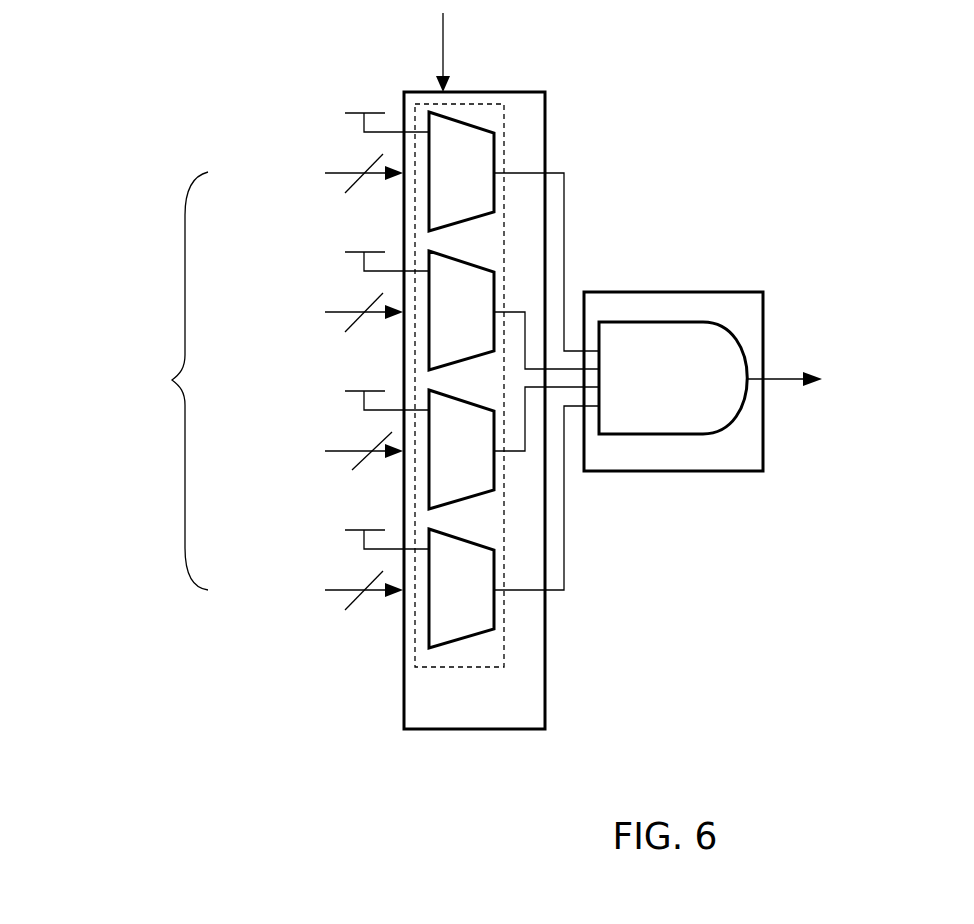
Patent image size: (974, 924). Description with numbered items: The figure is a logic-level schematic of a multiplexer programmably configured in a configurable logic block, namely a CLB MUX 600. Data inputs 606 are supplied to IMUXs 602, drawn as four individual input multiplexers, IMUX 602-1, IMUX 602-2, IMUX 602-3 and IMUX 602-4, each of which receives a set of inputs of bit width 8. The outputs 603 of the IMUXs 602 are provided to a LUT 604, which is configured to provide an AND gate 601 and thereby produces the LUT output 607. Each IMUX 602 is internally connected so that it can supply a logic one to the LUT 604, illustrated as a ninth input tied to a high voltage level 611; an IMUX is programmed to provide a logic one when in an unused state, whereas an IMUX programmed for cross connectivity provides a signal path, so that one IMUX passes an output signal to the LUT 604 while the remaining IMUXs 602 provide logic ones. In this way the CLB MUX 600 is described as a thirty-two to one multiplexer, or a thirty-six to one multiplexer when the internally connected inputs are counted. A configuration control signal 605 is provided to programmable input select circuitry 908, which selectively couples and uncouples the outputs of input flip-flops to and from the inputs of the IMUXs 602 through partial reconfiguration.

The CLB MUX 600 is at (826, 118).
The AND gate 601 is at (659, 387).
The IMUXs 602 is at (430, 668).
The IMUX 602-1 is at (438, 184).
The IMUX 602-2 is at (438, 323).
The IMUX 602-3 is at (438, 462).
The IMUX 602-4 is at (438, 601).
The outputs 603 is at (564, 188).
The LUT 604 is at (622, 292).
The configuration control signal 605 is at (443, 30).
The data inputs 606 is at (106, 410).
The LUT output 607 is at (789, 380).
The high voltage level 611 is at (345, 113).
The bit width 8 is at (371, 203).
The programmable input select circuitry 908 is at (545, 610).